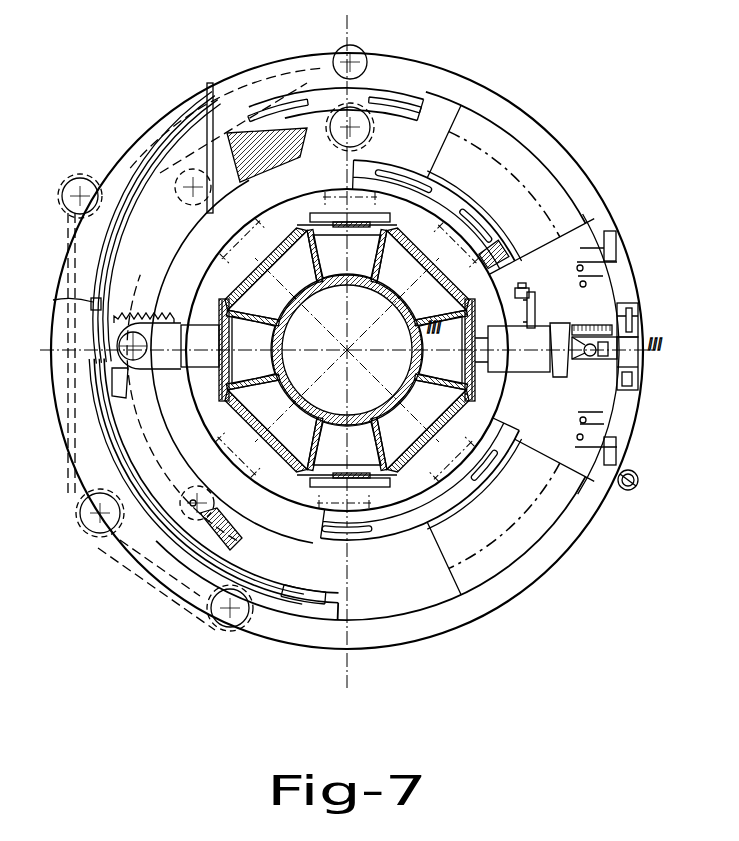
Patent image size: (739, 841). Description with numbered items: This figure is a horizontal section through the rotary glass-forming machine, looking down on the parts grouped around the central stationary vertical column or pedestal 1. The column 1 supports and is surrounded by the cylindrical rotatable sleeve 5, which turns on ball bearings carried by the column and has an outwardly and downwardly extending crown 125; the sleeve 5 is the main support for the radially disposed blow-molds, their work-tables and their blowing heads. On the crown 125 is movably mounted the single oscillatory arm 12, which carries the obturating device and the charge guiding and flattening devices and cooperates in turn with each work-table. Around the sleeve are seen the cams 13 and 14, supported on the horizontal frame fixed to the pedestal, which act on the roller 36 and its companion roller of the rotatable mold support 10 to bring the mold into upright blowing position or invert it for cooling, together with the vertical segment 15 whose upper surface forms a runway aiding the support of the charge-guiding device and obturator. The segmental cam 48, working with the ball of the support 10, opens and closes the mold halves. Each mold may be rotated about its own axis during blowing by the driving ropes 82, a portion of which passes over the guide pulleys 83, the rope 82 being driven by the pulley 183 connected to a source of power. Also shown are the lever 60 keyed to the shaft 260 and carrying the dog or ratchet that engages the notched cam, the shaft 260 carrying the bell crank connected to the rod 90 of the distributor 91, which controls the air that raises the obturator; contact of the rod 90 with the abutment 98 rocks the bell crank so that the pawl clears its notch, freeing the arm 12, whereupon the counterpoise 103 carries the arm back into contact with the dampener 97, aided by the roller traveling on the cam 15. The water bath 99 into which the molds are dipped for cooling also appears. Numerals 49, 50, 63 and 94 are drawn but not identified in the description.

The stationary vertical column or pedestal 1 is at (318, 362).
The cylindrical rotatable sleeve 5 is at (310, 290).
The rotatable support for the mold 10 is at (167, 362).
The oscillatory arm 12 is at (527, 357).
The cam 13 is at (146, 182).
The cam 14 is at (405, 190).
The vertical segment 15 is at (110, 447).
The roller 36 is at (53, 300).
The segmental cam 48 is at (166, 446).
The pin 49 is at (210, 84).
The band end block 50 is at (196, 503).
The lever 60 is at (536, 318).
The stop 63 is at (522, 292).
The driving ropes 82 is at (287, 63).
The guide pulleys 83 is at (196, 180).
The rod 90 is at (633, 315).
The distributor 91 is at (629, 382).
The tapered coupling 94 is at (562, 378).
The dampener 97 is at (622, 446).
The abutment 98 is at (613, 260).
The water bath 99 is at (488, 153).
The counterpoise 103 is at (624, 487).
The crown 125 is at (375, 240).
The pulley 183 is at (364, 47).
The shaft 260 is at (594, 326).